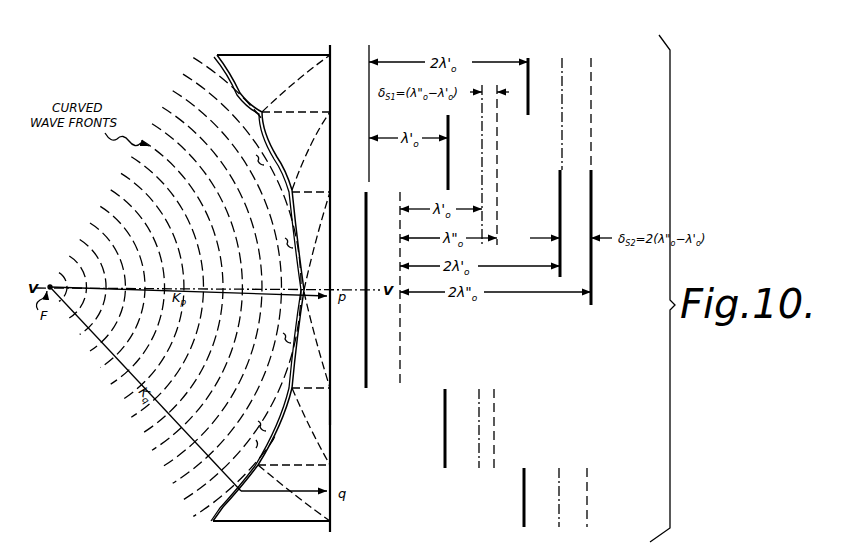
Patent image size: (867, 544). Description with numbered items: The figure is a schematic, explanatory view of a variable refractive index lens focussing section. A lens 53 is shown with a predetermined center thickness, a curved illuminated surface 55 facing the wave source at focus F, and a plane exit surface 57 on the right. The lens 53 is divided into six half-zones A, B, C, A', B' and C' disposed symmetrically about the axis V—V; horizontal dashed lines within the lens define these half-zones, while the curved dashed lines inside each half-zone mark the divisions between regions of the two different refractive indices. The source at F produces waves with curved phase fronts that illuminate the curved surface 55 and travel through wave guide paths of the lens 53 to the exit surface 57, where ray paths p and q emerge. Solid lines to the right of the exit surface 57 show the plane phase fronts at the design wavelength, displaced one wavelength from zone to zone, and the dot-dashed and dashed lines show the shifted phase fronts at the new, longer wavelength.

The lens 53 is at (216, 50).
The curved illuminated surface 55 is at (255, 443).
The plane exit surface 57 is at (331, 416).